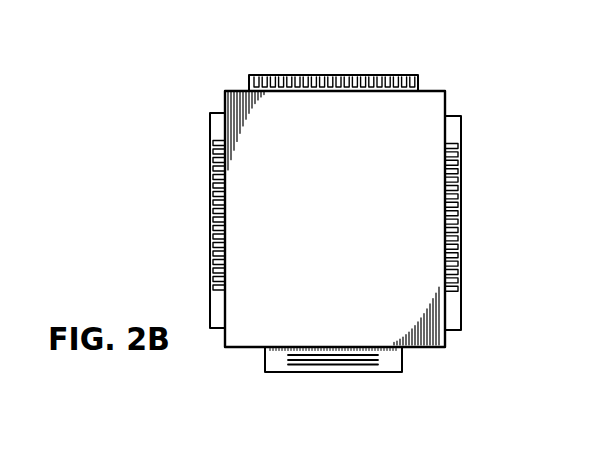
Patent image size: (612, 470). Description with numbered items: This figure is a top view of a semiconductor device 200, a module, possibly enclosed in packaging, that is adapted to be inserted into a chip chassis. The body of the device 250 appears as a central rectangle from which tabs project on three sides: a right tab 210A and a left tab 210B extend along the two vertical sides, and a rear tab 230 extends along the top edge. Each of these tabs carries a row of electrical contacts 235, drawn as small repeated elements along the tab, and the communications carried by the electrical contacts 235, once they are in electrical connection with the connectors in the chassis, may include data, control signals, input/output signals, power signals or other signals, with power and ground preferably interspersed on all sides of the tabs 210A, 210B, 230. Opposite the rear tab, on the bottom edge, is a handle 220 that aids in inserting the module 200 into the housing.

The semiconductor device 200 is at (339, 219).
The right tab 210A is at (210, 137).
The left tab 210B is at (455, 137).
The handle 220 is at (363, 368).
The rear tab 230 is at (333, 53).
The electrical contacts 235 is at (287, 82).
The module body / substrate 250 is at (364, 220).